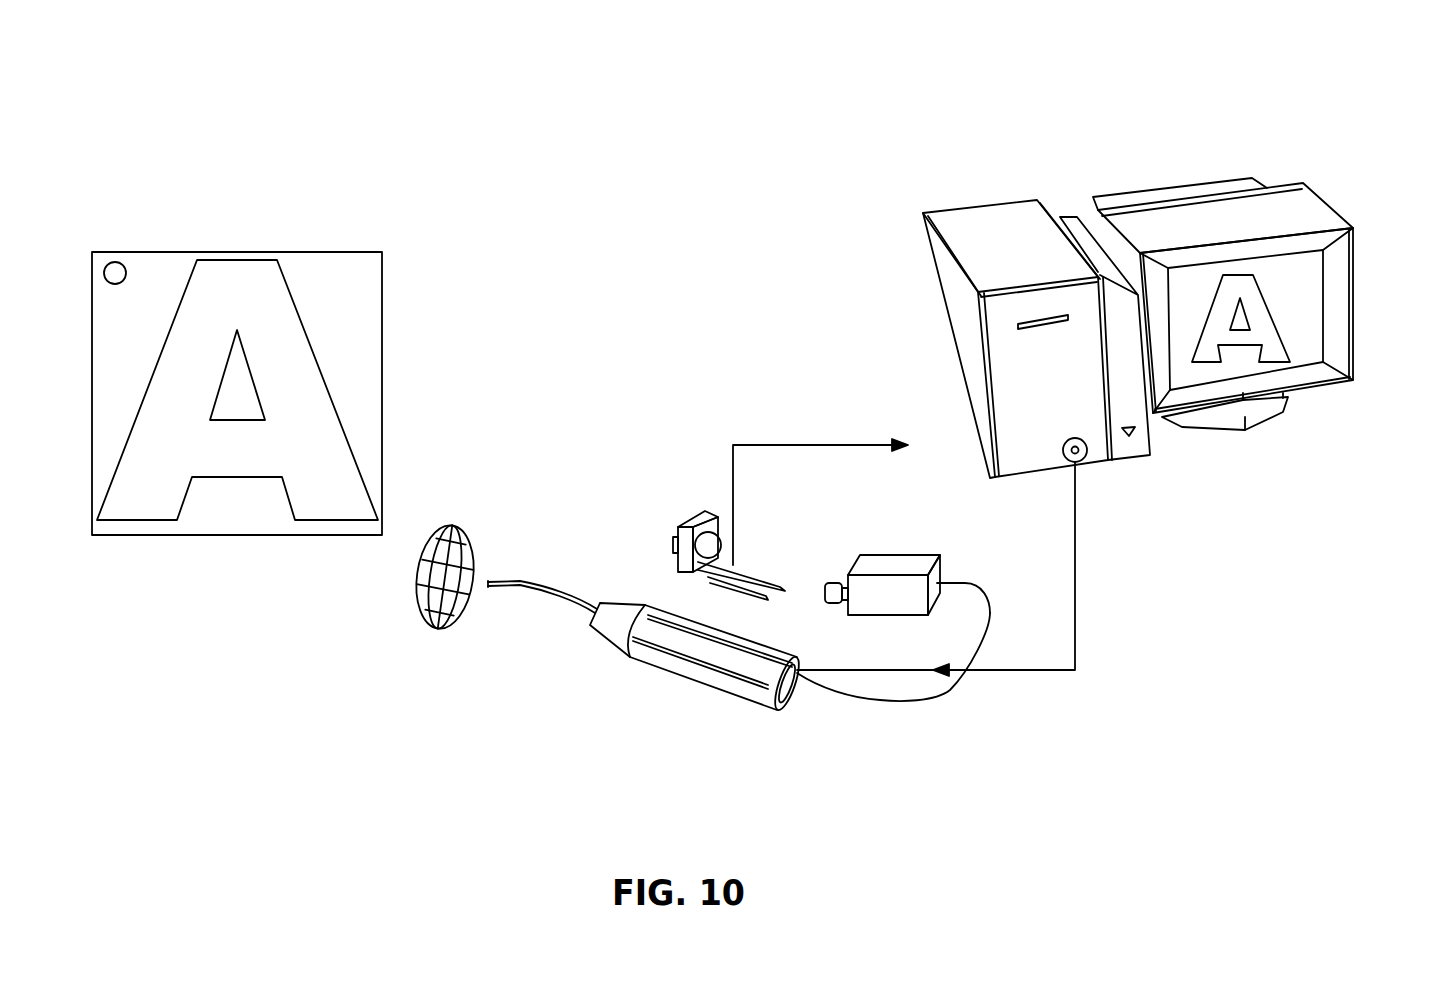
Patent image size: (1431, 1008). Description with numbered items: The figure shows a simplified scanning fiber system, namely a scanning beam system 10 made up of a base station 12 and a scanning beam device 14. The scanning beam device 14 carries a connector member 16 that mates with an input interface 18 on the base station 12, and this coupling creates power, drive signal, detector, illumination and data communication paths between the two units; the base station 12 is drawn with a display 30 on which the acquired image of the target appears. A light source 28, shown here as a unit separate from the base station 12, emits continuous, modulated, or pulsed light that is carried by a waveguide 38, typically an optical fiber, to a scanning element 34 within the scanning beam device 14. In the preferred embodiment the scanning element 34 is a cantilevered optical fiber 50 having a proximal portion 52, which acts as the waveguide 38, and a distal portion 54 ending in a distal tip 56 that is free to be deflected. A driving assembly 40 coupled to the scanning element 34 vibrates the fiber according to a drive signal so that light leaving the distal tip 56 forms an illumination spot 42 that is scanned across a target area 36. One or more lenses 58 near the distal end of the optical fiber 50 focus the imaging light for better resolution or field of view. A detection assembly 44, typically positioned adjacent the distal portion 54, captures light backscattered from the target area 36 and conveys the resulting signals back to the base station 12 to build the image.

The scanning beam system 10 is at (740, 115).
The base station 12 is at (1075, 135).
The scanning beam device 14 is at (694, 699).
The connector member 16 is at (1098, 475).
The input interface 18 is at (1064, 442).
The light source 28 is at (892, 555).
The display monitor 30 is at (1355, 265).
The scanning element 34 is at (545, 620).
The target area 36 is at (327, 252).
The waveguide 38 is at (923, 660).
The driving assembly 40 is at (778, 718).
The illumination spot 42 is at (114, 262).
The detection assembly 44 is at (694, 487).
The optical fiber 50 is at (525, 583).
The proximal portion 52 is at (990, 613).
The distal portion 54 is at (515, 608).
The distal tip 56 is at (488, 587).
The lens 58 is at (442, 530).